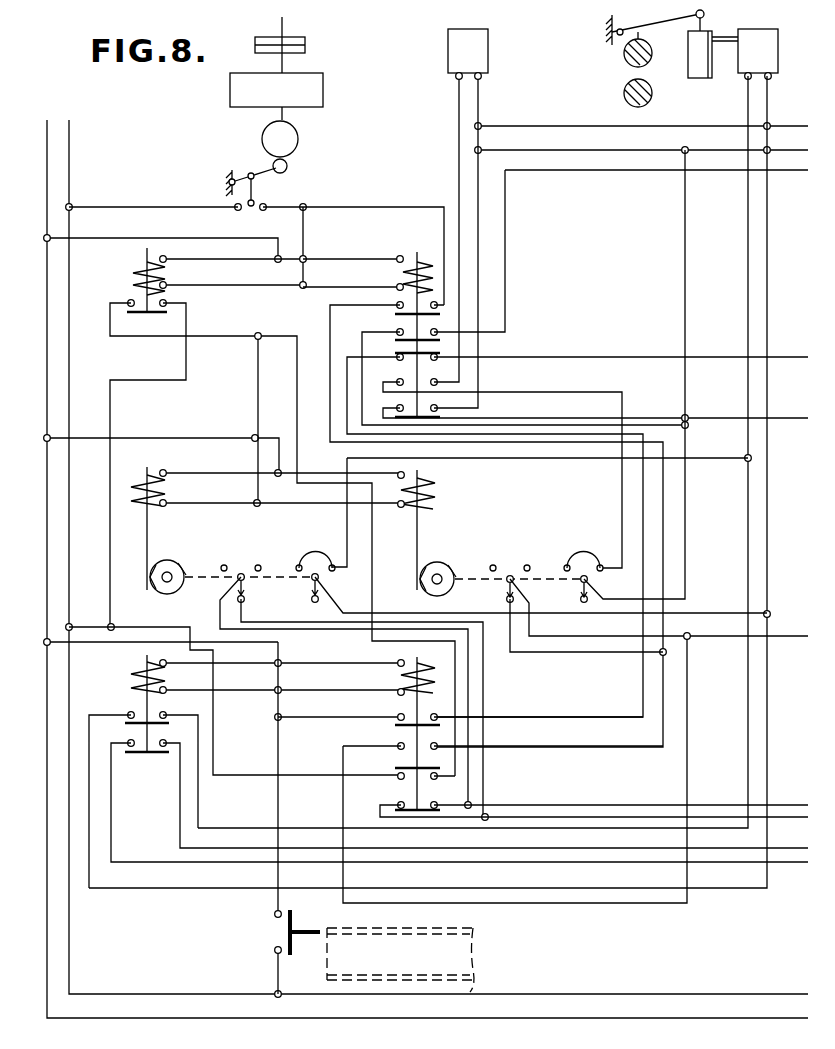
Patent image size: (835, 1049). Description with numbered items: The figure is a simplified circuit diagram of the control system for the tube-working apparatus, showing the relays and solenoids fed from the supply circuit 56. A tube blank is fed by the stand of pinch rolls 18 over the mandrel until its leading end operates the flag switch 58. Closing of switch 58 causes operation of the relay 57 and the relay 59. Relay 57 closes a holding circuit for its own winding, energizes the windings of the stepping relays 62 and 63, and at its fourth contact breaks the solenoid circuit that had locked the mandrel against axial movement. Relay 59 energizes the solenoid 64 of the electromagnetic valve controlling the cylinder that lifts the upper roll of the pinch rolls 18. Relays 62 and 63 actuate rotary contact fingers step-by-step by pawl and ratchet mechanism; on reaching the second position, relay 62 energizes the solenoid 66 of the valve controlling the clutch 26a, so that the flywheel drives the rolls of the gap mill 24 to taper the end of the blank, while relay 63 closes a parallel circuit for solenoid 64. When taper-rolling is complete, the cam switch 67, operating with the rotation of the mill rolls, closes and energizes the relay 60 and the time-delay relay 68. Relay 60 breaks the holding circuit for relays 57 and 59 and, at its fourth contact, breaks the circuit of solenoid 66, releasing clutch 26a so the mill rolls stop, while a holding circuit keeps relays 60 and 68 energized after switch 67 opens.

The supply circuit 56 is at (47, 183).
The clutch 26a is at (305, 46).
The gap mill 24 is at (323, 92).
The cam switch 67 is at (268, 204).
The time-delay relay 68 is at (138, 273).
The relay 60 is at (405, 277).
The solenoid 66 is at (488, 57).
The solenoid 64 is at (742, 70).
The pinch rolls 18 is at (630, 85).
The relay 63 is at (150, 510).
The relay 62 is at (420, 512).
The relay 59 is at (135, 680).
The relay 57 is at (405, 680).
The flag switch 58 is at (288, 932).